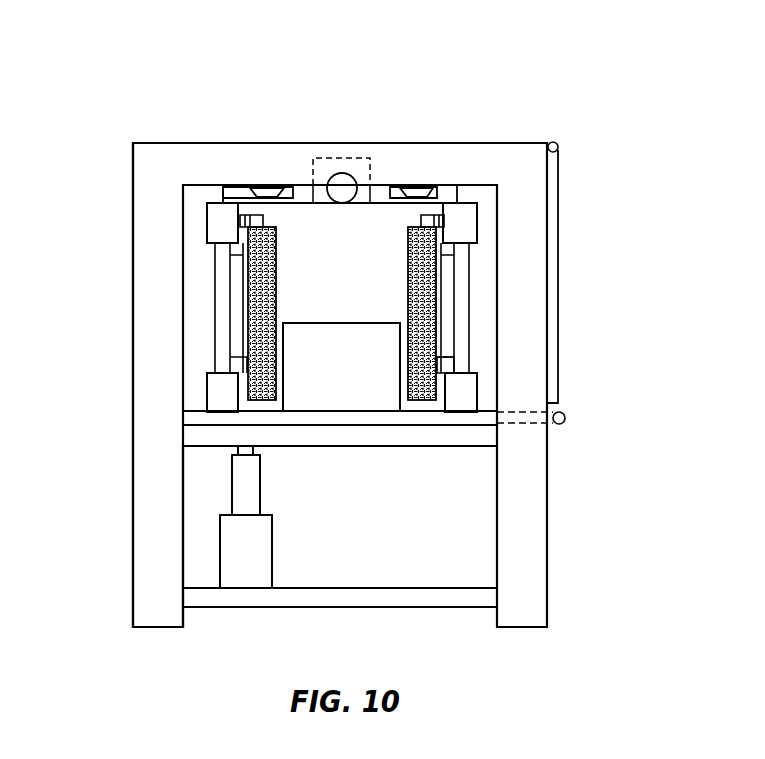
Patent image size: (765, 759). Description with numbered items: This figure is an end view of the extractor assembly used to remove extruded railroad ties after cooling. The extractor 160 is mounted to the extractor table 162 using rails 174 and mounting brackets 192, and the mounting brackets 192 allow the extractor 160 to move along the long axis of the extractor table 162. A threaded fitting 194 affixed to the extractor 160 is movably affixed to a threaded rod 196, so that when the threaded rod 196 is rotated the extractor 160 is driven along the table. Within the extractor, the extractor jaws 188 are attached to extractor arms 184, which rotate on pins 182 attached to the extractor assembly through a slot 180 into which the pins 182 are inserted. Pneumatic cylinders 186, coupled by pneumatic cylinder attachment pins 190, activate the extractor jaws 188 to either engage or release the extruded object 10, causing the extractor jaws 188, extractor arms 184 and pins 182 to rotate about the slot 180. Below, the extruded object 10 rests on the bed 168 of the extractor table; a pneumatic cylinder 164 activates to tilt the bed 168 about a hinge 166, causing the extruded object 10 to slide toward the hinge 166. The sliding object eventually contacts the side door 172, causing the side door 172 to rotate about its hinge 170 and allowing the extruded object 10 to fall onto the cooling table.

The extruded object 10 is at (362, 333).
The extractor 160 is at (197, 357).
The extractor table 162 is at (147, 467).
The pneumatic cylinder 164 is at (253, 496).
The hinge 166 is at (563, 412).
The bed 168 is at (387, 415).
The hinge 170 is at (557, 143).
The side door 172 is at (556, 185).
The rails 174 is at (417, 190).
The slot 180 is at (463, 392).
The pins 182 is at (462, 330).
The extractor arms 184 is at (443, 250).
The pneumatic cylinders 186 is at (243, 220).
The extractor jaws 188 is at (250, 300).
The pneumatic cylinder attachment pins 190 is at (268, 218).
The mounting brackets 192 is at (237, 192).
The threaded fitting 194 is at (362, 193).
The threaded rod 196 is at (345, 186).